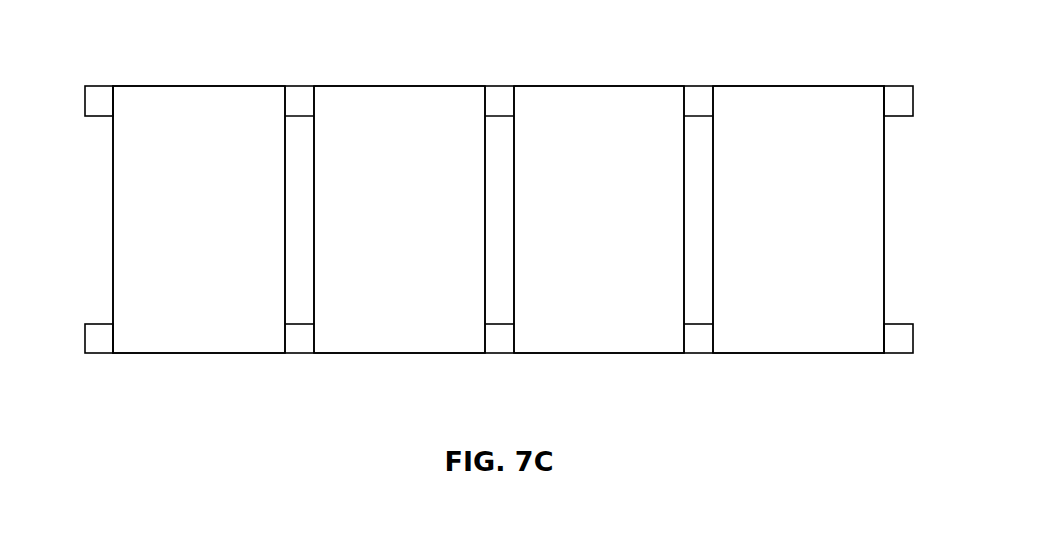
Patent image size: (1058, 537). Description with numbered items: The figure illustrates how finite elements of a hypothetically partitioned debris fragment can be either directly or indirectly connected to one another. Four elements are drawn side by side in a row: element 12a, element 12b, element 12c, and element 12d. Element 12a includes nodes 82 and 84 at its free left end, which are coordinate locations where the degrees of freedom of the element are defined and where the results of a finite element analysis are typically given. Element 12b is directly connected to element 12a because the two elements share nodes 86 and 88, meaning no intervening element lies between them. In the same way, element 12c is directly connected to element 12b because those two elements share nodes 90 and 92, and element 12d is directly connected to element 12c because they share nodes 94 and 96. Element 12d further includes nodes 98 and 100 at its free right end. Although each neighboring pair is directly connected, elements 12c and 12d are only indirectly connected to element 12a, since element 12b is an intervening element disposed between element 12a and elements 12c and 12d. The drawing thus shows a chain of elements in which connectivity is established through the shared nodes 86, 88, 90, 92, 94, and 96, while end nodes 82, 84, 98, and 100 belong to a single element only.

The element 12a is at (219, 225).
The element 12b is at (419, 225).
The element 12c is at (619, 225).
The element 12d is at (819, 225).
The node 82 is at (112, 86).
The node 84 is at (97, 353).
The node 86 is at (289, 86).
The node 88 is at (298, 353).
The node 90 is at (489, 86).
The node 92 is at (490, 353).
The node 94 is at (689, 86).
The node 96 is at (693, 353).
The node 98 is at (886, 86).
The node 100 is at (893, 353).